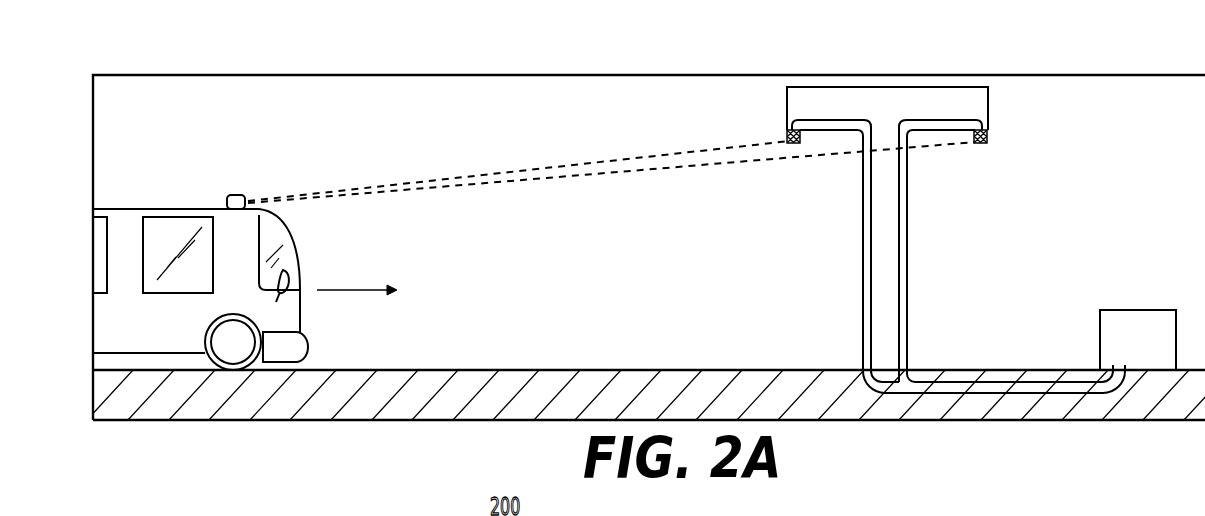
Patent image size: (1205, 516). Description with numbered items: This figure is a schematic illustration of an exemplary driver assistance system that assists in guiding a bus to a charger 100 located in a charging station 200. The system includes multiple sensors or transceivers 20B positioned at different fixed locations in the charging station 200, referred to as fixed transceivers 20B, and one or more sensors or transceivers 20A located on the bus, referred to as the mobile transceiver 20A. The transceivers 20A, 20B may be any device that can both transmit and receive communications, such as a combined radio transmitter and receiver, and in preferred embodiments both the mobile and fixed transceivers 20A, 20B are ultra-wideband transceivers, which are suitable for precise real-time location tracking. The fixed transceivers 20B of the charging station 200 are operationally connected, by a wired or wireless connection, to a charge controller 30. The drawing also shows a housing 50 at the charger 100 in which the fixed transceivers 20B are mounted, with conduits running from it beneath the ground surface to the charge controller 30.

The charging station 200 is at (521, 63).
The charger 100 is at (946, 203).
The mobile transceiver 20A is at (239, 194).
The fixed transceivers 20B is at (788, 131).
The housing 50 is at (897, 120).
The charge controller 30 is at (1152, 353).